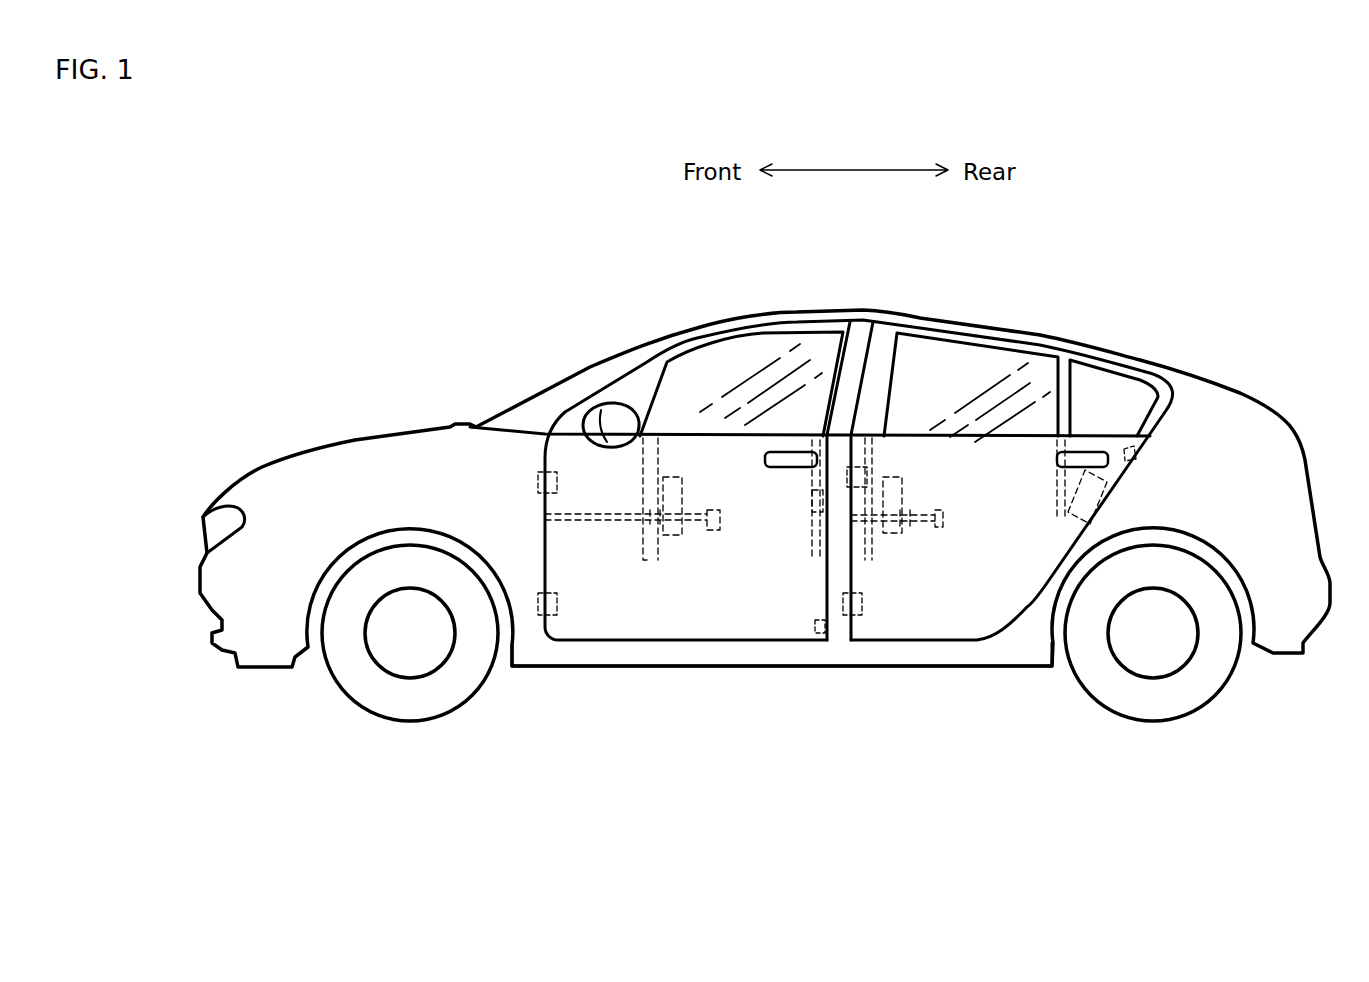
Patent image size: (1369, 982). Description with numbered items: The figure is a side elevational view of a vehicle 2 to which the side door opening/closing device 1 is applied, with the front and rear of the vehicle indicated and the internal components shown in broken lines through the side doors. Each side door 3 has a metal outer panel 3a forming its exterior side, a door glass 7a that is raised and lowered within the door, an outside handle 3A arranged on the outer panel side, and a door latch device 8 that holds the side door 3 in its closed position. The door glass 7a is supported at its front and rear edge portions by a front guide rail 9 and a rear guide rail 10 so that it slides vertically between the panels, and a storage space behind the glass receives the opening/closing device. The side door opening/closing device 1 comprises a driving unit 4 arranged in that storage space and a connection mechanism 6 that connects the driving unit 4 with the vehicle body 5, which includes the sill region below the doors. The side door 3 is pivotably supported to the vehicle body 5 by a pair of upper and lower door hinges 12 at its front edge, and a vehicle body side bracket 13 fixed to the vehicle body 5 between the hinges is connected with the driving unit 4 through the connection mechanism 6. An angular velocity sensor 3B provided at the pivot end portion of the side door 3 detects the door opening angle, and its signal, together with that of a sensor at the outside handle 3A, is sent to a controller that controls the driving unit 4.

The side door opening/closing device 1 is at (692, 530).
The vehicle 2 is at (1252, 391).
The side door 3 is at (685, 329).
The outside handle 3A is at (791, 450).
The angular velocity sensor 3B is at (1128, 446).
The outer panel 3a is at (642, 613).
The driving unit 4 is at (684, 485).
The vehicle body 5 is at (518, 681).
The connection mechanism 6 is at (590, 522).
The door glass 7a is at (822, 348).
The door latch device 8 is at (810, 505).
The front guide rail 9 is at (640, 563).
The rear guide rail 10 is at (817, 530).
The door hinge 12 is at (537, 471).
The vehicle body side bracket 13 is at (537, 517).